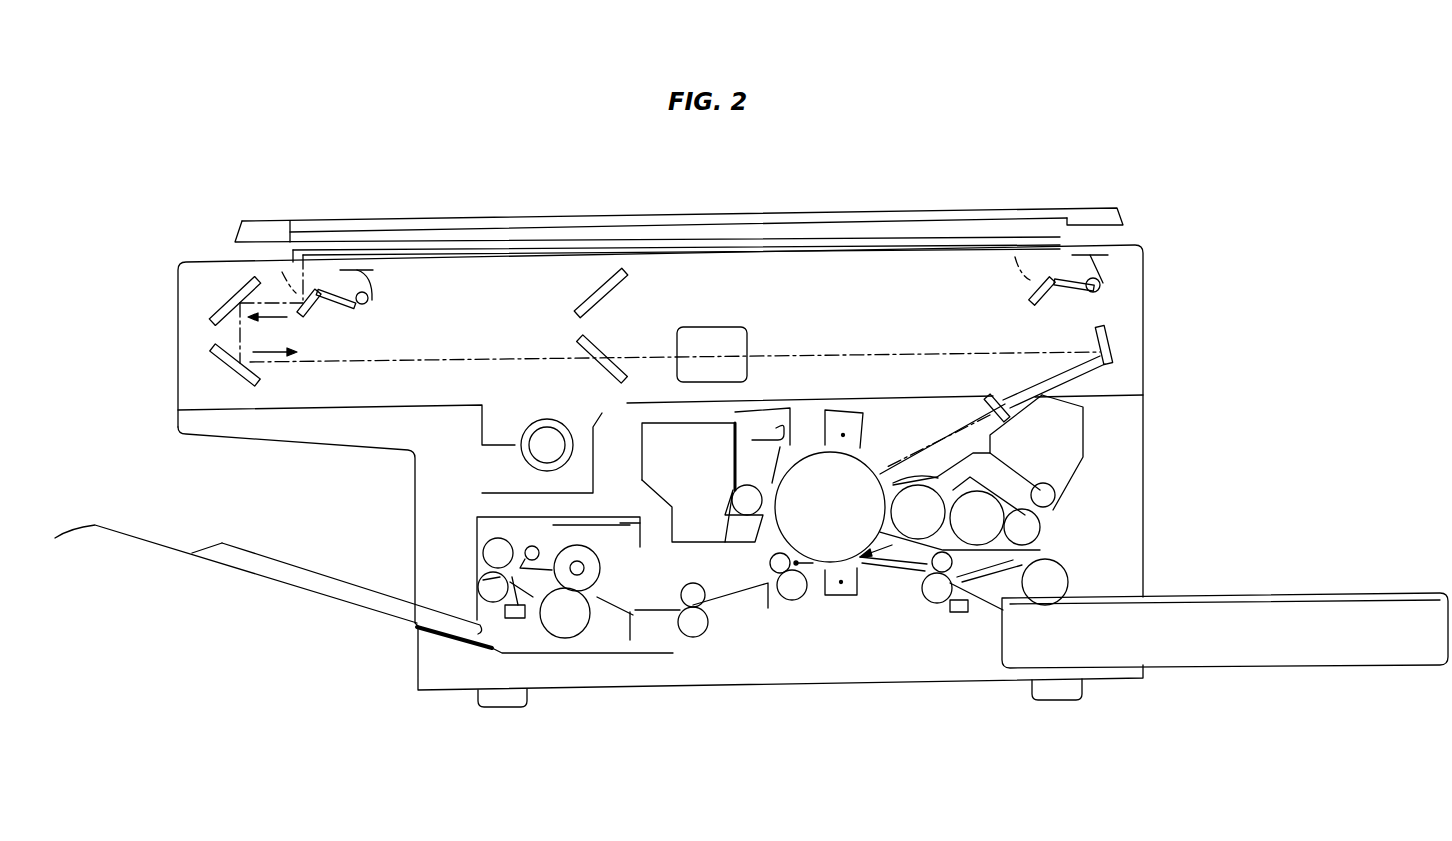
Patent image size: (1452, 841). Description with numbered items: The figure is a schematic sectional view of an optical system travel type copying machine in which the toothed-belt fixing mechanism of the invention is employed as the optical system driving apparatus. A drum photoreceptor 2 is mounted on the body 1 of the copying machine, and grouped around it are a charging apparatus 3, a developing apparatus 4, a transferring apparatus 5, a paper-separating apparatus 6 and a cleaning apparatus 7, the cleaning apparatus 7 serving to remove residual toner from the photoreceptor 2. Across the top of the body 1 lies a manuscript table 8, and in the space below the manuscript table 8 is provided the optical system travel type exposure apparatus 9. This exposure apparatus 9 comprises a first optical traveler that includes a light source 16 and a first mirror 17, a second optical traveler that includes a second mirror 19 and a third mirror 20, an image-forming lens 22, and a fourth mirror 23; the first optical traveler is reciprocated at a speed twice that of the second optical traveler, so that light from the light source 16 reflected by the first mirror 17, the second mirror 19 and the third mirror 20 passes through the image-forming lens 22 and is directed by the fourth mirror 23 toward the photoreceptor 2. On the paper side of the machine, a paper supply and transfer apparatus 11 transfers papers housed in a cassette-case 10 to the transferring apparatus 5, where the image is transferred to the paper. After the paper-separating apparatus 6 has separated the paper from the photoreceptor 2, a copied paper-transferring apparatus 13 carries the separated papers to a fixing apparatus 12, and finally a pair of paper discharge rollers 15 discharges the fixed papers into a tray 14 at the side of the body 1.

The body 1 is at (1148, 475).
The drum photoreceptor 2 is at (887, 443).
The charging apparatus 3 is at (848, 410).
The developing apparatus 4 is at (1047, 512).
The transferring apparatus 5 is at (845, 595).
The paper-separating apparatus 6 is at (792, 600).
The cleaning apparatus 7 is at (748, 543).
The manuscript table 8 is at (879, 240).
The optical system travel type exposure apparatus 9 is at (822, 290).
The cassette-case 10 is at (1305, 665).
The paper supply and transfer apparatus 11 is at (937, 611).
The fixing apparatus 12 is at (600, 568).
The copied paper-transferring apparatus 13 is at (713, 640).
The tray 14 is at (285, 562).
The paper discharge rollers 15 is at (478, 586).
The light source 16 is at (370, 299).
The first mirror 17 is at (313, 317).
The second mirror 19 is at (235, 296).
The third mirror 20 is at (213, 362).
The image-forming lens 22 is at (710, 327).
The fourth mirror 23 is at (1110, 353).